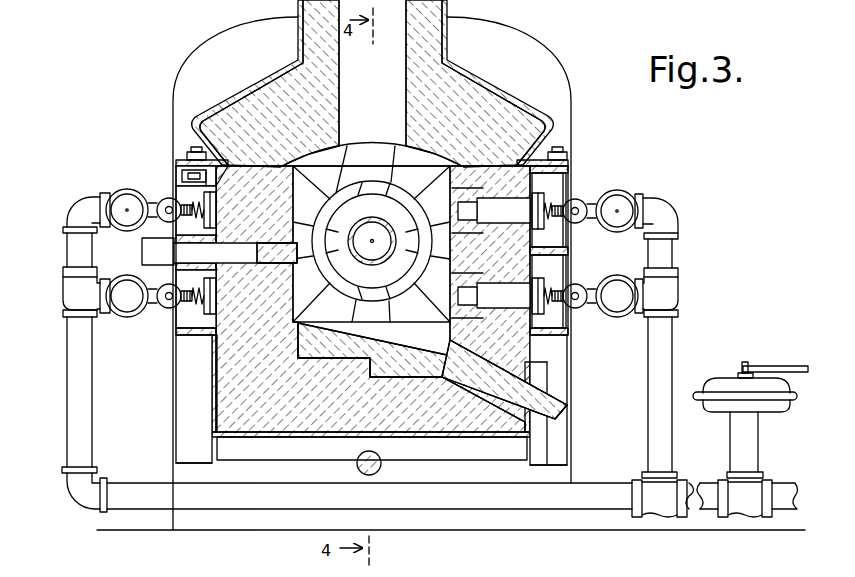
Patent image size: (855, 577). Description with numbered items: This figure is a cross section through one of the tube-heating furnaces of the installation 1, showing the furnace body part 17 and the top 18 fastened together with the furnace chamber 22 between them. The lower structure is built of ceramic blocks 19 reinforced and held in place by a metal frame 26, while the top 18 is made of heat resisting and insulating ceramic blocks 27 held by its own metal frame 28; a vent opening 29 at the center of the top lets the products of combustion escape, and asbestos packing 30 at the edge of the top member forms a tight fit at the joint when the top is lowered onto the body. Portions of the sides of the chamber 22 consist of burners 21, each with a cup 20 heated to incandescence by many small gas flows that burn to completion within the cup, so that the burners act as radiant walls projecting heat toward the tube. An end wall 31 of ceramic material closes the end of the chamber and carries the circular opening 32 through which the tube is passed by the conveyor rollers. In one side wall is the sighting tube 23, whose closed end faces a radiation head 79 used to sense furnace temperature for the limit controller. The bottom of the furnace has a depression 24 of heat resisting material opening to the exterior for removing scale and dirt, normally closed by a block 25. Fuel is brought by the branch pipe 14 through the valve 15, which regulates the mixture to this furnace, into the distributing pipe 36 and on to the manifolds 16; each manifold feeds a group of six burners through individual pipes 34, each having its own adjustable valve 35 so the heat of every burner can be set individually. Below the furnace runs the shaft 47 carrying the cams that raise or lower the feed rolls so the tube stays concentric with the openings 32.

The apparatus casing 1 is at (173, 90).
The branch pipe 14 is at (783, 490).
The valve 15 is at (725, 385).
The manifold 16 is at (118, 194).
The body part 17 is at (294, 434).
The top 18 is at (300, 40).
The ceramic blocks 19 is at (453, 427).
The cup 20 is at (453, 219).
The burner 21 is at (456, 288).
The furnace chamber 22 is at (358, 234).
The sighting tube 23 is at (235, 252).
The depression 24 is at (374, 349).
The block 25 is at (552, 411).
The metal frame 26 is at (557, 351).
The ceramic blocks 27 is at (482, 88).
The metal frame 28 is at (531, 112).
The vent opening 29 is at (372, 73).
The asbestos packing 30 is at (186, 161).
The end wall 31 is at (371, 156).
The circular opening 32 is at (398, 281).
The pipe 34 is at (154, 203).
The valve 35 is at (170, 216).
The distributing pipe 36 is at (80, 395).
The shaft 47 is at (380, 466).
The radiation head 79 is at (142, 246).